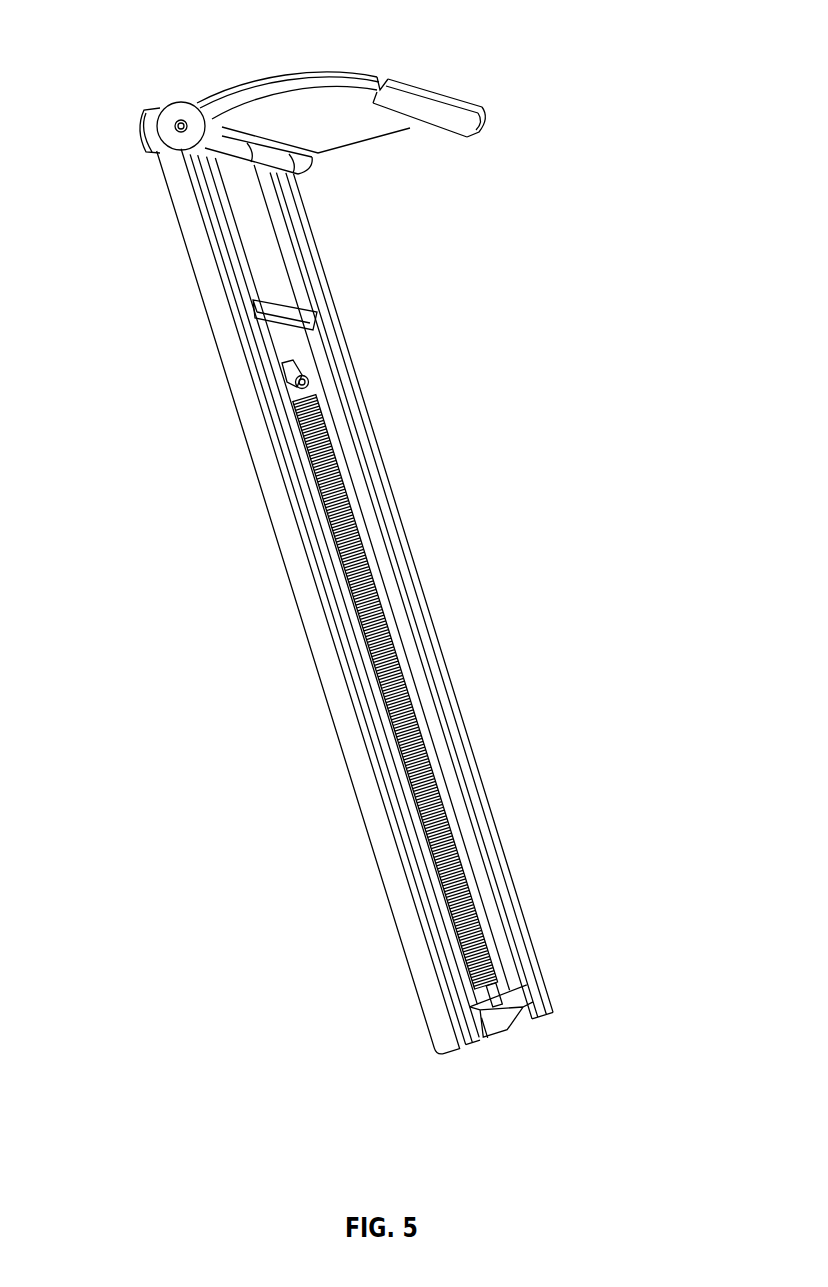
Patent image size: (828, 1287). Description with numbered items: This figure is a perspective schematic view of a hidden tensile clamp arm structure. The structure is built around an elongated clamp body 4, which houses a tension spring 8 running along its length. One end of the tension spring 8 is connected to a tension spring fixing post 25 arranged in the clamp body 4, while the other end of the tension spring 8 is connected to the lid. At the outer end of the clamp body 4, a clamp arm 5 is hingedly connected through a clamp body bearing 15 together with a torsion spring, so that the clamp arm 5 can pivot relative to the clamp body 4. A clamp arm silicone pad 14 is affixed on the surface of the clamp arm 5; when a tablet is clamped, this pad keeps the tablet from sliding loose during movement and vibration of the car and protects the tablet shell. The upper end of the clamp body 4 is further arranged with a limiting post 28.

The clamp body 4 is at (290, 532).
The clamp arm 5 is at (423, 103).
The tension spring 8 is at (403, 697).
The clamp arm silicone pad 14 is at (303, 123).
The clamp body bearing 15 is at (178, 120).
The tension spring fixing post 25 is at (308, 377).
The limiting post 28 is at (287, 313).